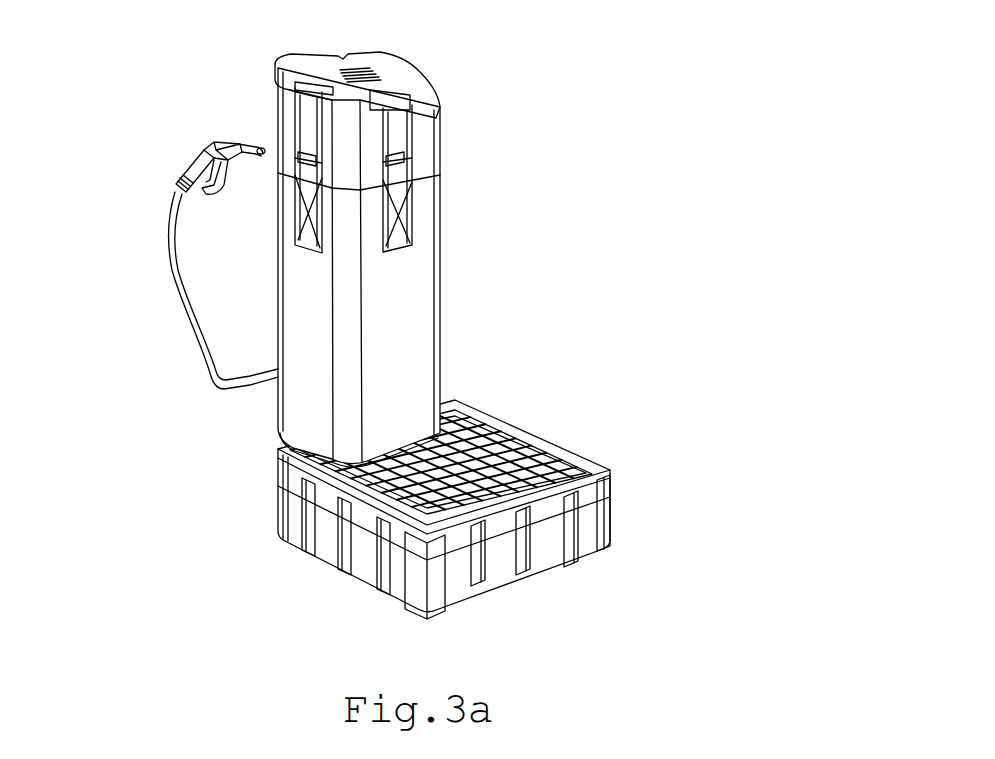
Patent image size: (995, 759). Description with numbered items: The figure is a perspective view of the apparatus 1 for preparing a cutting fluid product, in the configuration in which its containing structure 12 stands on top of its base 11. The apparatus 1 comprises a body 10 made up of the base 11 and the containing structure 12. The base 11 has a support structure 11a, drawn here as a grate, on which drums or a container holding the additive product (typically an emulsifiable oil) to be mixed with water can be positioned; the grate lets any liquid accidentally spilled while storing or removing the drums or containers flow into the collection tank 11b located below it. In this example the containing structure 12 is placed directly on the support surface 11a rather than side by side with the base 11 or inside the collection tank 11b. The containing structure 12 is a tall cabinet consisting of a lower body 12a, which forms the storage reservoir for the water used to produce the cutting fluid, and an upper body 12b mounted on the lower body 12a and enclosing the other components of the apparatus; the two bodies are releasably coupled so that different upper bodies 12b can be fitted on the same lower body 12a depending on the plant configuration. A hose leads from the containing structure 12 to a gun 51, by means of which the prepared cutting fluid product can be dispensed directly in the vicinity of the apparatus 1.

The apparatus 1 is at (738, 109).
The body 10 is at (183, 469).
The base 11 is at (622, 549).
The support structure 11a is at (513, 420).
The collection tank 11b is at (543, 562).
The containing structure 12 is at (245, 92).
The lower body 12a is at (386, 84).
The upper body 12b is at (415, 286).
The gun 51 is at (207, 152).